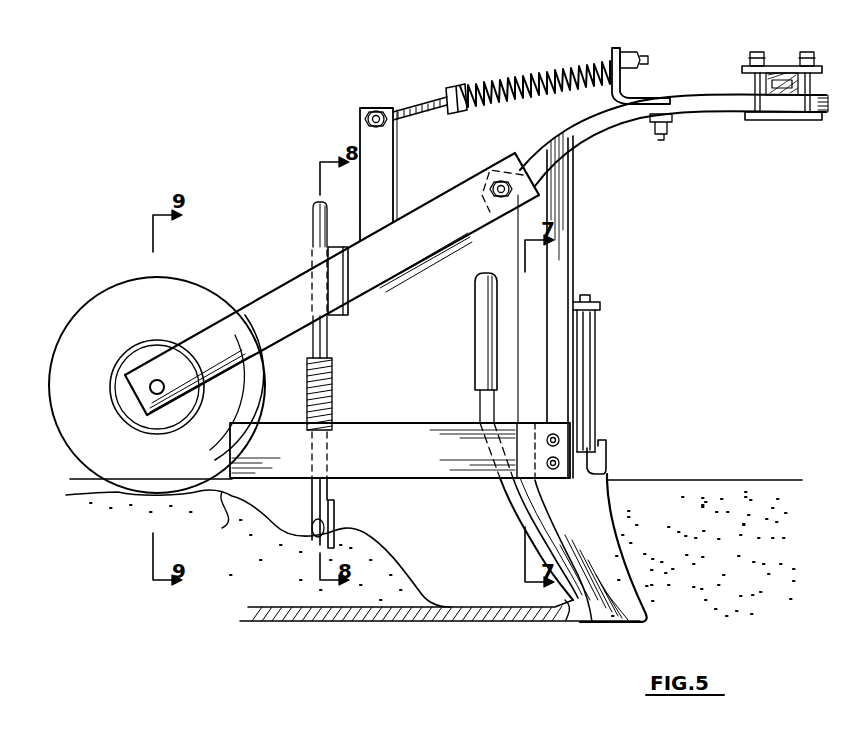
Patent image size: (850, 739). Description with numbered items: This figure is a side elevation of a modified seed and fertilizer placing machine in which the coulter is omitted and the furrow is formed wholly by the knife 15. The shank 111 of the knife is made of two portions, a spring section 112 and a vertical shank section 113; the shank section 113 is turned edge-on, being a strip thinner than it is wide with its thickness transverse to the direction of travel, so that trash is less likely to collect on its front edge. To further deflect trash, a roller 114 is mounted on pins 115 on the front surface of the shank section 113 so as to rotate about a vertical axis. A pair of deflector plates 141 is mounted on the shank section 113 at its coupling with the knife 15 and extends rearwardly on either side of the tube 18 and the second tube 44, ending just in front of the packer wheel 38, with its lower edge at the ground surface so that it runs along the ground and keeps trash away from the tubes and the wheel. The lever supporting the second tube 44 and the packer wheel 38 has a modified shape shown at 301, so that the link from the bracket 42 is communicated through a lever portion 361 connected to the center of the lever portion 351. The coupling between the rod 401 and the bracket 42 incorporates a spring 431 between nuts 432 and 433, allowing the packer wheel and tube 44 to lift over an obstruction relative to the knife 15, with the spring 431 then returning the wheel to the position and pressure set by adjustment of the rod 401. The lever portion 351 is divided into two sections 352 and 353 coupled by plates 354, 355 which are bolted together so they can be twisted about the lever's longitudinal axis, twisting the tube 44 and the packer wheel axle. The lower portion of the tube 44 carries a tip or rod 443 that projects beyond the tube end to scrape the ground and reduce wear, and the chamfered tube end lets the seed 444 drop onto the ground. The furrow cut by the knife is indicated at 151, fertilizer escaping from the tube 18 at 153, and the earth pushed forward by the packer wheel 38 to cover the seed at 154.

The packer wheel 38 is at (97, 302).
The modified lever 301 is at (219, 288).
The lever section 353 is at (202, 342).
The lever portion 351 is at (399, 270).
The lever section 352 is at (455, 182).
The coupling plate 355 is at (322, 304).
The coupling plate 354 is at (349, 272).
The second tube 44 is at (312, 518).
The tip or rod 443 is at (335, 534).
The seed 444 is at (316, 542).
The lever portion 361 is at (391, 146).
The rod 401 is at (394, 110).
The nut 432 is at (446, 88).
The spring 431 is at (509, 72).
The bracket 42 is at (616, 48).
The nut 433 is at (636, 50).
The spring section 112 is at (625, 142).
The shank 111 is at (590, 160).
The pin 115 is at (586, 300).
The roller 114 is at (596, 362).
The vertical shank section 113 is at (511, 278).
The deflector plate 141 is at (478, 480).
The tube 18 is at (514, 515).
The knife 15 is at (632, 604).
The furrow 151 is at (554, 610).
The fertilizer 153 is at (424, 622).
The earth pushed forwardly 154 is at (230, 512).